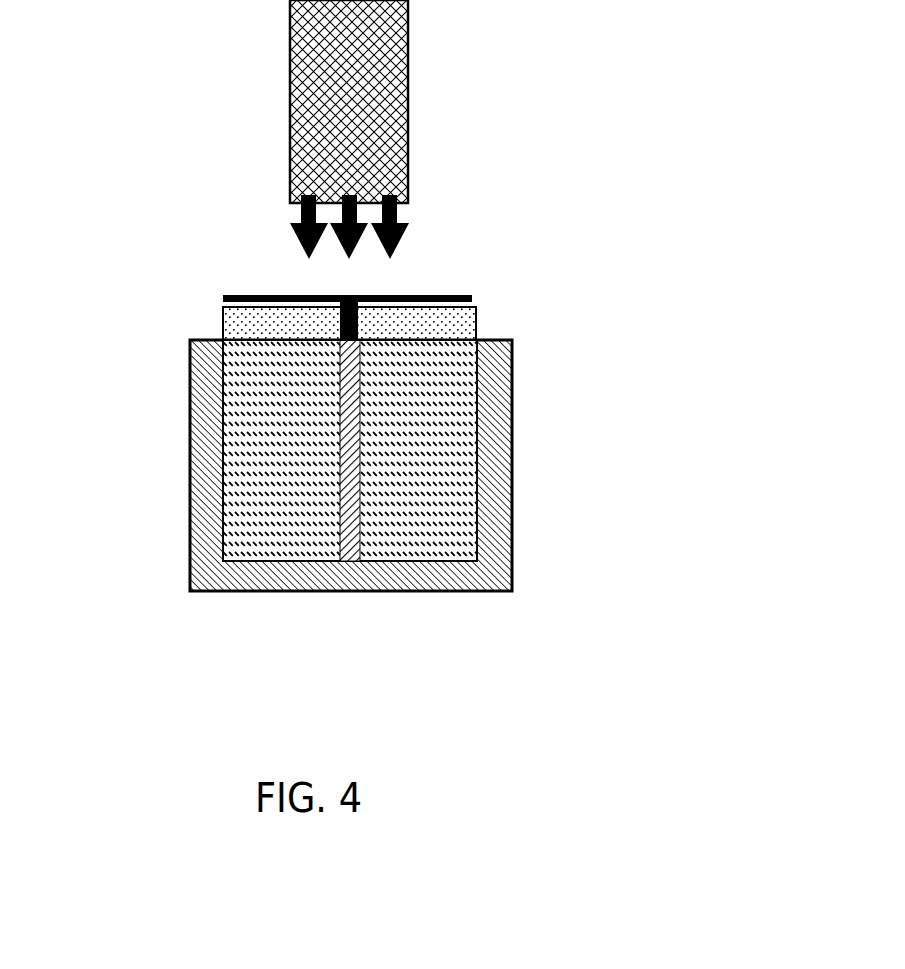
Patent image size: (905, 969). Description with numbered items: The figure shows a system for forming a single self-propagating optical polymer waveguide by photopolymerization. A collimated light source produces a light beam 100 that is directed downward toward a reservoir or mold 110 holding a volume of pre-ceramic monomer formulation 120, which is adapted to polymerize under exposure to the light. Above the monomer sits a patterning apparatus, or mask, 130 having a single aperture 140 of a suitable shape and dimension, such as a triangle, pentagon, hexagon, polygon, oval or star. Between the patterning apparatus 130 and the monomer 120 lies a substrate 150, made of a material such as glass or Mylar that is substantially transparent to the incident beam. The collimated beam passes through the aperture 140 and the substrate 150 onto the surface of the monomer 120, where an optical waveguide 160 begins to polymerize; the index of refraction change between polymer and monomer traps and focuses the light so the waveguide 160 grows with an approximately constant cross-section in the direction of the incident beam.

The light beam 100 is at (413, 72).
The container 110 is at (212, 542).
The reactive material 120 is at (262, 420).
The cover layer 130 is at (229, 284).
The plug 140 is at (350, 294).
The intermediate layer 150 is at (481, 317).
The optical waveguide 160 is at (363, 443).